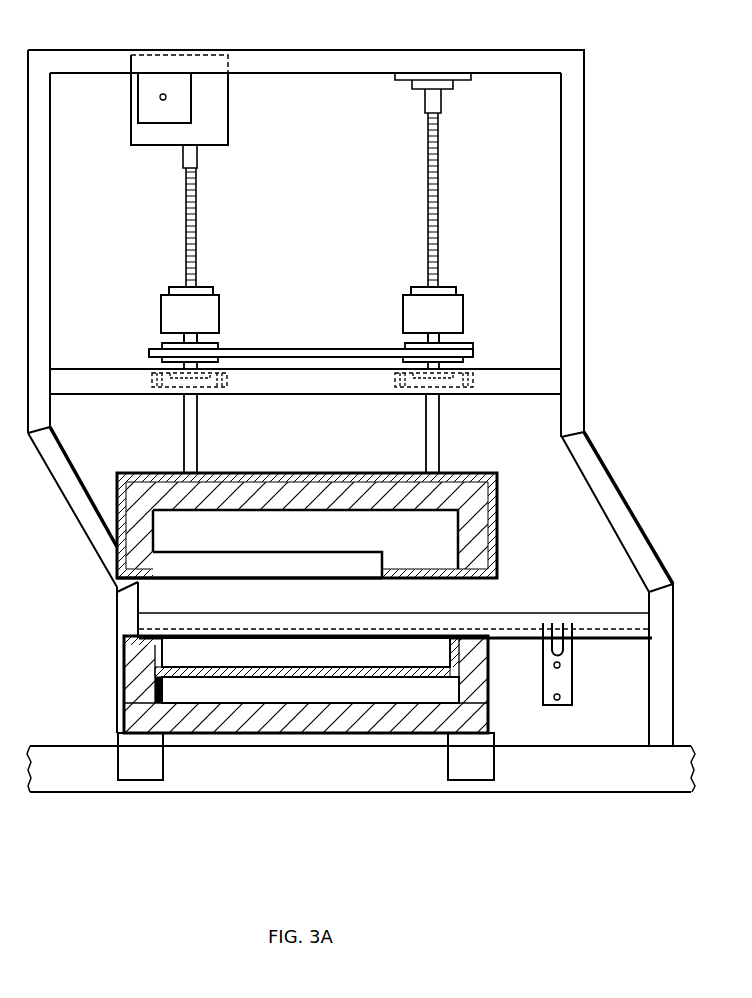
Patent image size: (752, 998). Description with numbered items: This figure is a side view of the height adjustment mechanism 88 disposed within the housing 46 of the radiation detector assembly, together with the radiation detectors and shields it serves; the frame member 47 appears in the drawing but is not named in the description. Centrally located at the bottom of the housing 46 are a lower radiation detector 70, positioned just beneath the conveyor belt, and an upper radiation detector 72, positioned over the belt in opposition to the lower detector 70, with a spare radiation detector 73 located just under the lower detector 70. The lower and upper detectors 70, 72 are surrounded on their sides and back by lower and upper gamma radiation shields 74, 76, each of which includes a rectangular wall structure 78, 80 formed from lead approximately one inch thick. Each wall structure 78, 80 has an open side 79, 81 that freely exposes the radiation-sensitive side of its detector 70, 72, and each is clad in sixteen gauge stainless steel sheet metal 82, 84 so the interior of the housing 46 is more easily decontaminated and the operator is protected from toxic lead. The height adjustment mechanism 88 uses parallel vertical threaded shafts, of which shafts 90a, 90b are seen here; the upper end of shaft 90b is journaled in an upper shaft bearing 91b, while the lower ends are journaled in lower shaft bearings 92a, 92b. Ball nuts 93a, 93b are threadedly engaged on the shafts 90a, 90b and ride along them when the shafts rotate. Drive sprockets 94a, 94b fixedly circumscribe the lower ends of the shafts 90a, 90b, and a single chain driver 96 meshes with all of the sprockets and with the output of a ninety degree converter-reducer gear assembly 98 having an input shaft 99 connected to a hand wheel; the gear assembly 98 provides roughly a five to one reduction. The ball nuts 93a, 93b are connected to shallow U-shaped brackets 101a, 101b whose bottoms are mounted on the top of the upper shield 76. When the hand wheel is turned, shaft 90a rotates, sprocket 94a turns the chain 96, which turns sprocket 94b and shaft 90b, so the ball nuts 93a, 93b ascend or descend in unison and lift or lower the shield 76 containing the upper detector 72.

The housing 46 is at (104, 44).
The frame 47 is at (590, 142).
The height adjustment mechanism 88 is at (195, 84).
The converter-reducer gear assembly 98 is at (150, 110).
The input shaft 99 is at (163, 93).
The threaded shaft 90a is at (185, 208).
The threaded shaft 90b is at (427, 208).
The upper shaft bearing 91b is at (455, 85).
The ball nut 93a is at (172, 310).
The ball nut 93b is at (455, 305).
The drive sprocket 94a is at (220, 348).
The drive sprocket 94b is at (402, 347).
The chain driver 96 is at (310, 348).
The lower shaft bearing 92a is at (152, 380).
The lower shaft bearing 92b is at (472, 376).
The U-shaped bracket 101a is at (190, 424).
The U-shaped bracket 101b is at (432, 424).
The upper gamma radiation shield 76 is at (346, 524).
The rectangular wall structure 78 is at (290, 497).
The upper radiation detector 72 is at (360, 558).
The open side 79 is at (278, 584).
The stainless steel sheet metal 82 is at (440, 580).
The open side 81 is at (254, 611).
The lower radiation detector 70 is at (370, 655).
The spare radiation detector 73 is at (370, 693).
The lower gamma radiation shield 74 is at (361, 743).
The stainless steel sheet metal 84 is at (470, 690).
The rectangular wall structure 80 is at (306, 709).